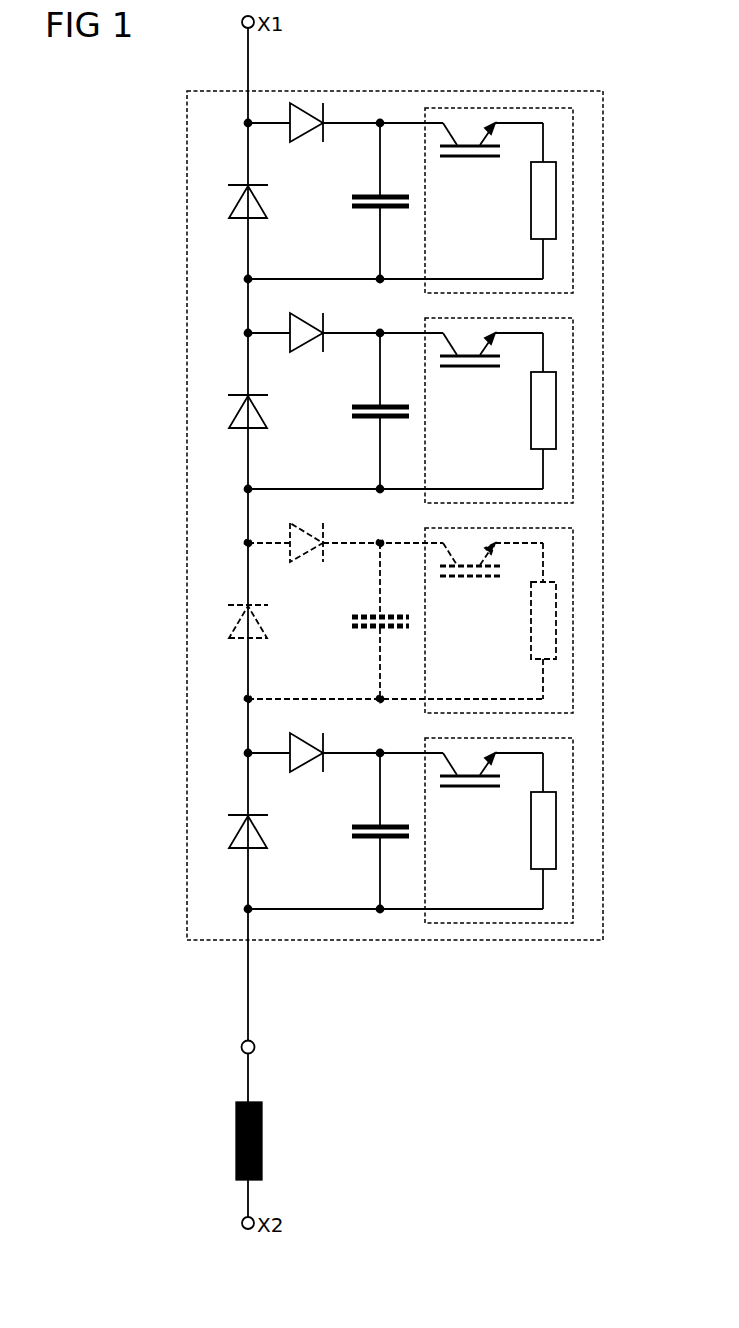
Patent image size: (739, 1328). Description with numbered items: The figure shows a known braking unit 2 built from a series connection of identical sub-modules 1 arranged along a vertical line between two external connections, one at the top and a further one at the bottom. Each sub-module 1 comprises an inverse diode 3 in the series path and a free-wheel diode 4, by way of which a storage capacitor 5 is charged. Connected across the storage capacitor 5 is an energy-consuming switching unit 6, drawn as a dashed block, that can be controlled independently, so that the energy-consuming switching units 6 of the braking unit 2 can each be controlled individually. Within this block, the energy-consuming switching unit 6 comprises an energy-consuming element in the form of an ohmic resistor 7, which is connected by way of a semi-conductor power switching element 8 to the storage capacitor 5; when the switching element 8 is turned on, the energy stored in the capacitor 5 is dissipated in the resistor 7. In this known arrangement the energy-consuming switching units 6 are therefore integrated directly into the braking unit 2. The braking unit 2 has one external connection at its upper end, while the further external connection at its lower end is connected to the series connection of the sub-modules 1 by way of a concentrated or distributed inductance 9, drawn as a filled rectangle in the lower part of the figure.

The sub-module 1 is at (437, 513).
The braking unit 2 is at (603, 312).
The inverse diode 3 is at (260, 218).
The free-wheel diode 4 is at (305, 137).
The storage capacitor 5 is at (368, 208).
The energy-consuming switching unit 6 is at (536, 200).
The ohmic resistor 7 is at (531, 205).
The semi-conductor power switching element 8 is at (463, 158).
The inductance 9 is at (262, 1143).